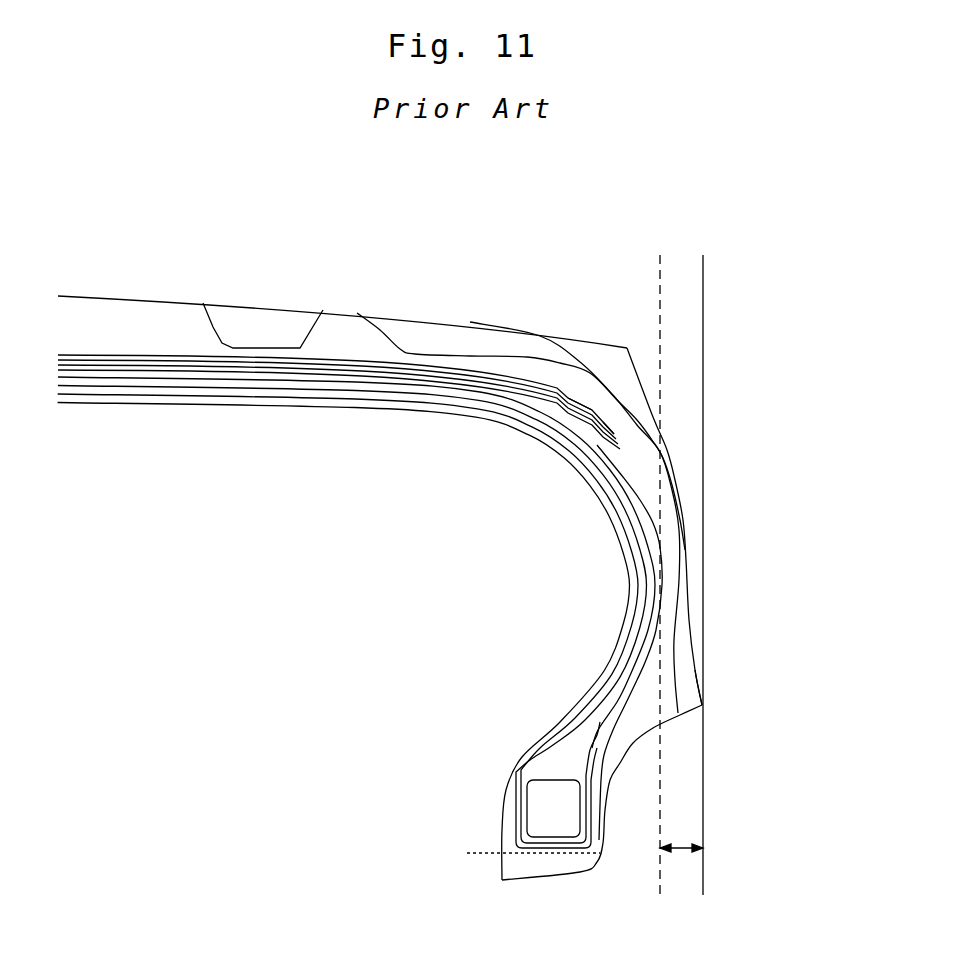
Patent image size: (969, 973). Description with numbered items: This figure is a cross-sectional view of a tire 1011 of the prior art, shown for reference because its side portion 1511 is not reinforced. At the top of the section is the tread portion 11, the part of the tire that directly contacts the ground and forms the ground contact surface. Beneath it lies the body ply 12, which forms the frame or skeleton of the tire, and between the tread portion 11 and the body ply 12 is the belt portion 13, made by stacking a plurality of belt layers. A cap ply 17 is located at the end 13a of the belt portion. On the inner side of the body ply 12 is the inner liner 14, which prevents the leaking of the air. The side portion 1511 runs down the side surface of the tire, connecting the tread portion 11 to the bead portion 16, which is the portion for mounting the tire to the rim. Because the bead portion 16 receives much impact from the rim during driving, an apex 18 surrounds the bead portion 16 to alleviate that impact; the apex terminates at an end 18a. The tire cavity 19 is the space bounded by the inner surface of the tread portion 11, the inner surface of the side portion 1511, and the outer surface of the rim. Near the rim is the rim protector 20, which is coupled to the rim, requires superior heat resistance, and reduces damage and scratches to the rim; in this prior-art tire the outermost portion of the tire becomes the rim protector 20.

The tire 1011 is at (316, 278).
The tread portion 11 is at (166, 298).
The body ply 12 is at (137, 385).
The belt portion 13 is at (97, 370).
The end of the belt portion 13a is at (597, 447).
The inner liner 14 is at (207, 402).
The bead portion 16 is at (550, 815).
The cap ply 17 is at (610, 418).
The apex 18 is at (572, 762).
The end of the apex 18a is at (600, 720).
The tire cavity 19 is at (370, 488).
The rim protector 20 is at (702, 704).
The side portion 1511 is at (720, 635).